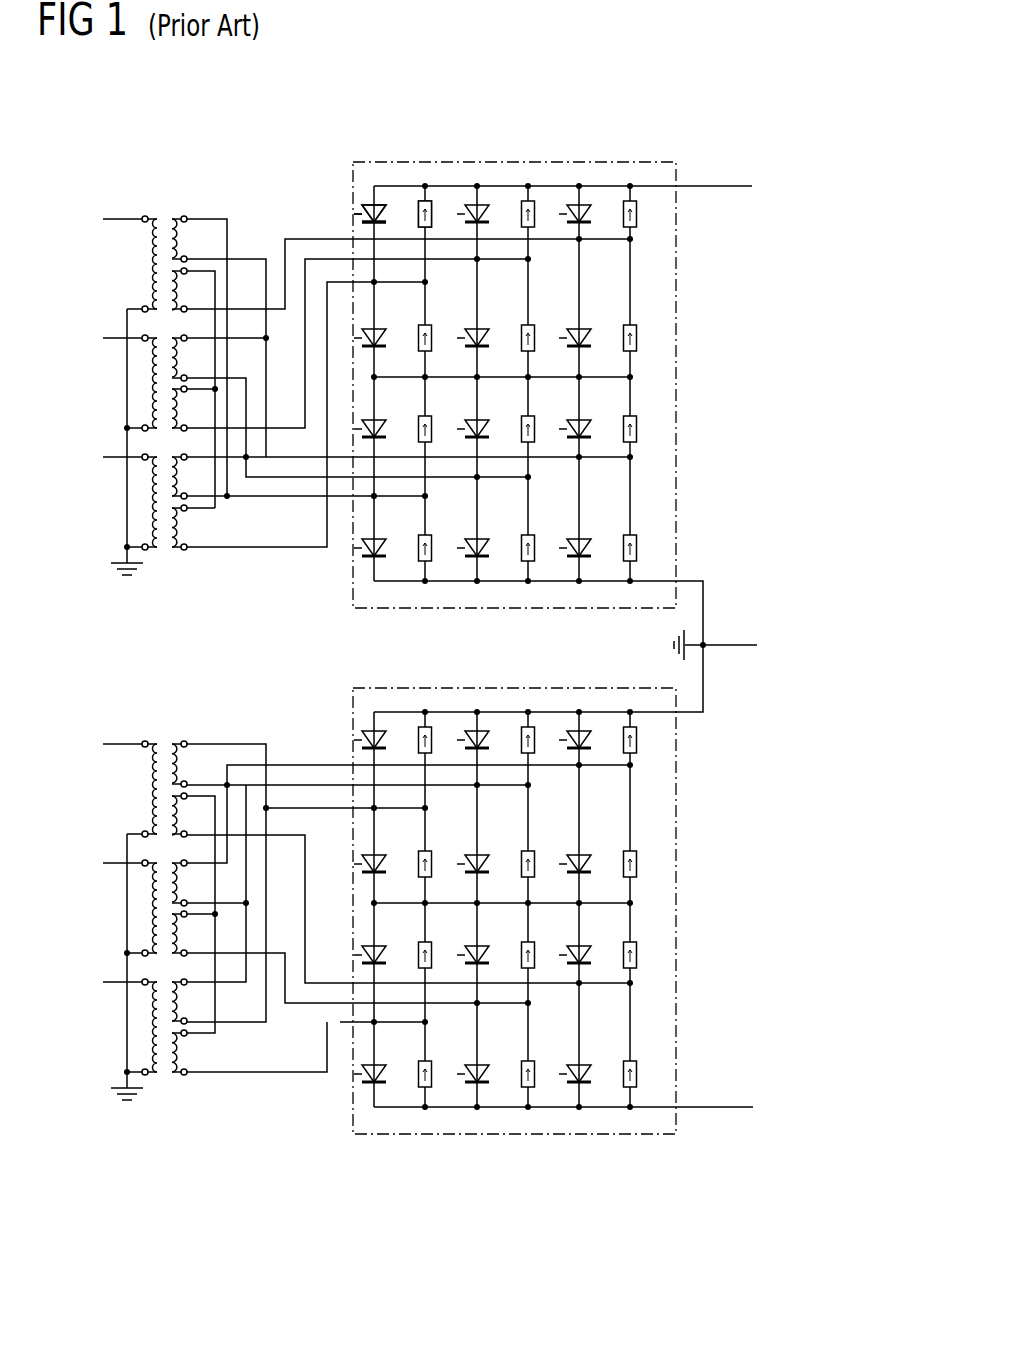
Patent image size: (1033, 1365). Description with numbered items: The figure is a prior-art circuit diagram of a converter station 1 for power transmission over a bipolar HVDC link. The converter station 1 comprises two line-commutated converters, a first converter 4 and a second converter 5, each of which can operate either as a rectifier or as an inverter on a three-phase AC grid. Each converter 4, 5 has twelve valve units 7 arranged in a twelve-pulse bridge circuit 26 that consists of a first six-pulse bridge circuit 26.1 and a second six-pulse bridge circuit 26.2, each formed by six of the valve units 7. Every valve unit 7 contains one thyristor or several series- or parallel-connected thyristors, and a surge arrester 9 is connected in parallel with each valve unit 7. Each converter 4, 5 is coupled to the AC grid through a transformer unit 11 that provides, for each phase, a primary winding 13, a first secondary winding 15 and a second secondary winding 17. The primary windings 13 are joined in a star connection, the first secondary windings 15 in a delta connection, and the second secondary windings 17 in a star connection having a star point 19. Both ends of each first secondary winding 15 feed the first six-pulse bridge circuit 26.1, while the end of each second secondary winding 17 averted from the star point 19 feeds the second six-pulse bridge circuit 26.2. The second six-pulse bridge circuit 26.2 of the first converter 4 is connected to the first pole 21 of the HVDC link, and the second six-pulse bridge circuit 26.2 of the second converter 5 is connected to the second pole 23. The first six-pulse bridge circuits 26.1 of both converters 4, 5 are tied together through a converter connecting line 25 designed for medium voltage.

The converter station 1 is at (117, 178).
The first converter 4 is at (557, 161).
The second converter 5 is at (560, 1134).
The valve unit 7 is at (386, 213).
The surge arrester 9 is at (433, 213).
The transformer unit 11 is at (167, 212).
The primary winding 13 is at (157, 252).
The first secondary winding 15 is at (173, 240).
The second secondary winding 17 is at (172, 291).
The star point 19 is at (214, 390).
The first pole 21 is at (722, 186).
The second pole 23 is at (728, 1107).
The converter connecting line 25 is at (704, 598).
The twelve-pulse bridge circuit 26 is at (763, 248).
The first six-pulse bridge circuit 26.1 is at (648, 455).
The second six-pulse bridge circuit 26.2 is at (648, 269).